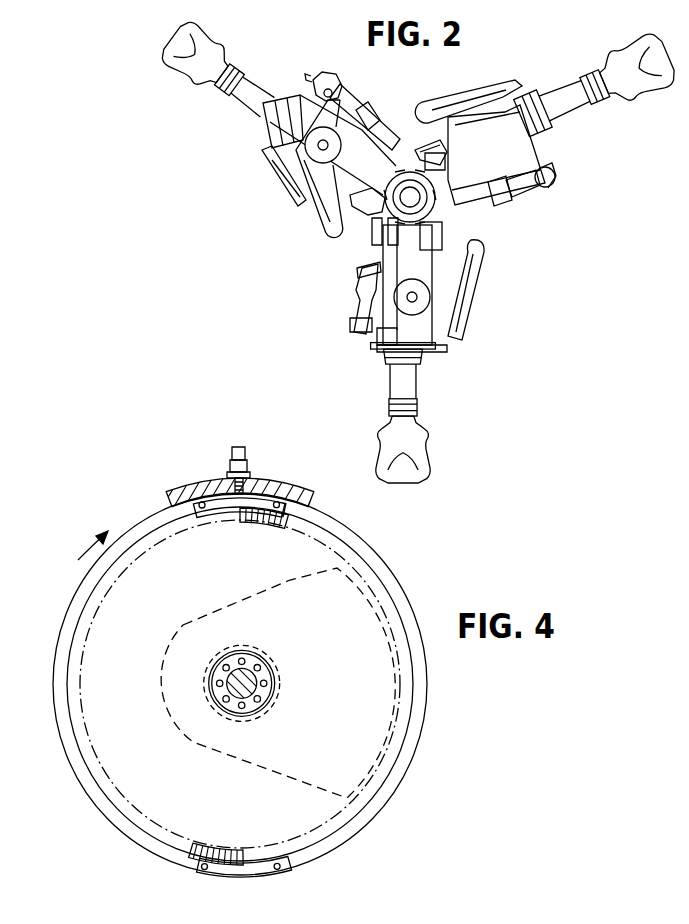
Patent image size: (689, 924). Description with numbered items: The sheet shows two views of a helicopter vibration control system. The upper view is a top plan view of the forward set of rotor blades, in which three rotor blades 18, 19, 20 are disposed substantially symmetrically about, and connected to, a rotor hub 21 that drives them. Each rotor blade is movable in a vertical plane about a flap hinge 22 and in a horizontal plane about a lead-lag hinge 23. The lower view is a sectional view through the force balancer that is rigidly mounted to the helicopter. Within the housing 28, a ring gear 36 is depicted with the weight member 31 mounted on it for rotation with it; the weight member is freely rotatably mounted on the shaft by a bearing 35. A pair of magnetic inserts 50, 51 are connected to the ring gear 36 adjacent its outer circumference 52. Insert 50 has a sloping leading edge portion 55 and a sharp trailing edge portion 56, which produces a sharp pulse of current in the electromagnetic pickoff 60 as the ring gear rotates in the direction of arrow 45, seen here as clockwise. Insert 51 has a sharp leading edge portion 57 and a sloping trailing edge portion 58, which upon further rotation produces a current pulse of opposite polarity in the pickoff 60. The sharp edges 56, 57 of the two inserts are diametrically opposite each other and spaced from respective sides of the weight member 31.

In FIG. 2, the rotor blade 18 is at (428, 458).
In FIG. 2, the rotor blade 19 is at (622, 60).
In FIG. 2, the rotor blade 20 is at (178, 67).
In FIG. 2, the rotor hub 21 is at (436, 232).
In FIG. 2, the flap hinge 22 is at (422, 146).
In FIG. 2, the lead-lag hinge 23 is at (508, 157).
In FIG. 4, the housing 28 is at (203, 486).
In FIG. 4, the weight member 31 is at (272, 586).
In FIG. 4, the bearing 35 is at (268, 708).
In FIG. 4, the ring gear 36 is at (68, 620).
In FIG. 4, the arrow 45 is at (78, 552).
In FIG. 4, the magnetic insert 50 is at (236, 508).
In FIG. 4, the magnetic insert 51 is at (250, 862).
In FIG. 4, the outer circumference 52 is at (120, 822).
In FIG. 4, the sloping leading edge portion 55 is at (286, 502).
In FIG. 4, the sharp lagging or trailing edge portion 56 is at (192, 512).
In FIG. 4, the sharp leading edge portion 57 is at (198, 870).
In FIG. 4, the sloping trailing edge portion 58 is at (284, 870).
In FIG. 4, the electromagnetic pickoff 60 is at (246, 456).